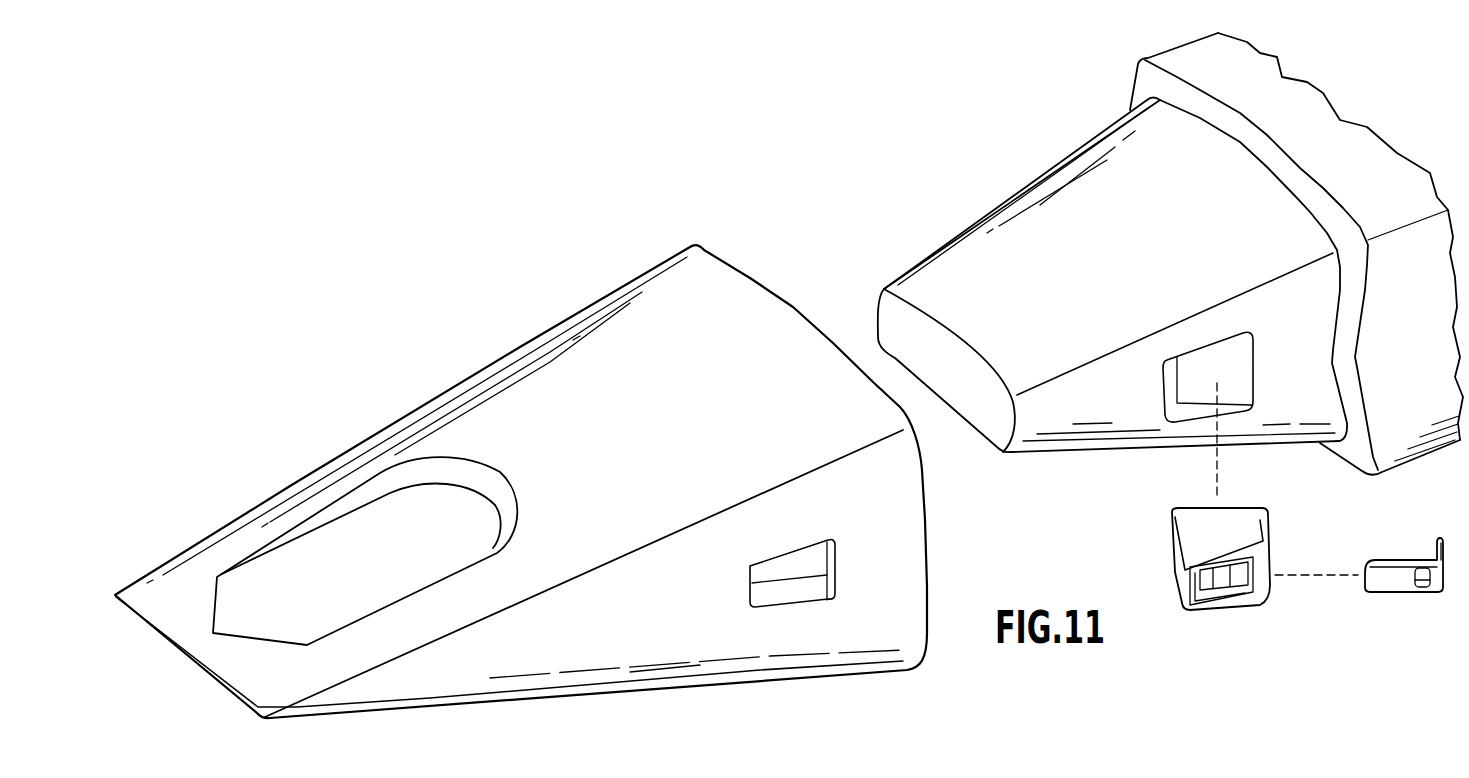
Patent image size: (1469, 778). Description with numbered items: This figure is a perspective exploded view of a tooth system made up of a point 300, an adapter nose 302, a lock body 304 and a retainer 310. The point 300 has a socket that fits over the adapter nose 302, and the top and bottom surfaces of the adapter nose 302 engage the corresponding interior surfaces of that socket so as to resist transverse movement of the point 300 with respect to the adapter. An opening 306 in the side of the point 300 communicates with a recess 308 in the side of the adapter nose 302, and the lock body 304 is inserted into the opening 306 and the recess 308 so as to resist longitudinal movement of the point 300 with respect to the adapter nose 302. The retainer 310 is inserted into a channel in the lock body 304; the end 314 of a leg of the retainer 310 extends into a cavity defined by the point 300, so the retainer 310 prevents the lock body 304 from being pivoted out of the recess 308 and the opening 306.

The point 300 is at (612, 327).
The adapter nose 302 is at (980, 253).
The lock body 304 is at (1185, 533).
The opening 306 is at (763, 597).
The recess 308 is at (1212, 360).
The retainer 310 is at (1395, 582).
The end of a leg of the retainer 314 is at (1363, 572).